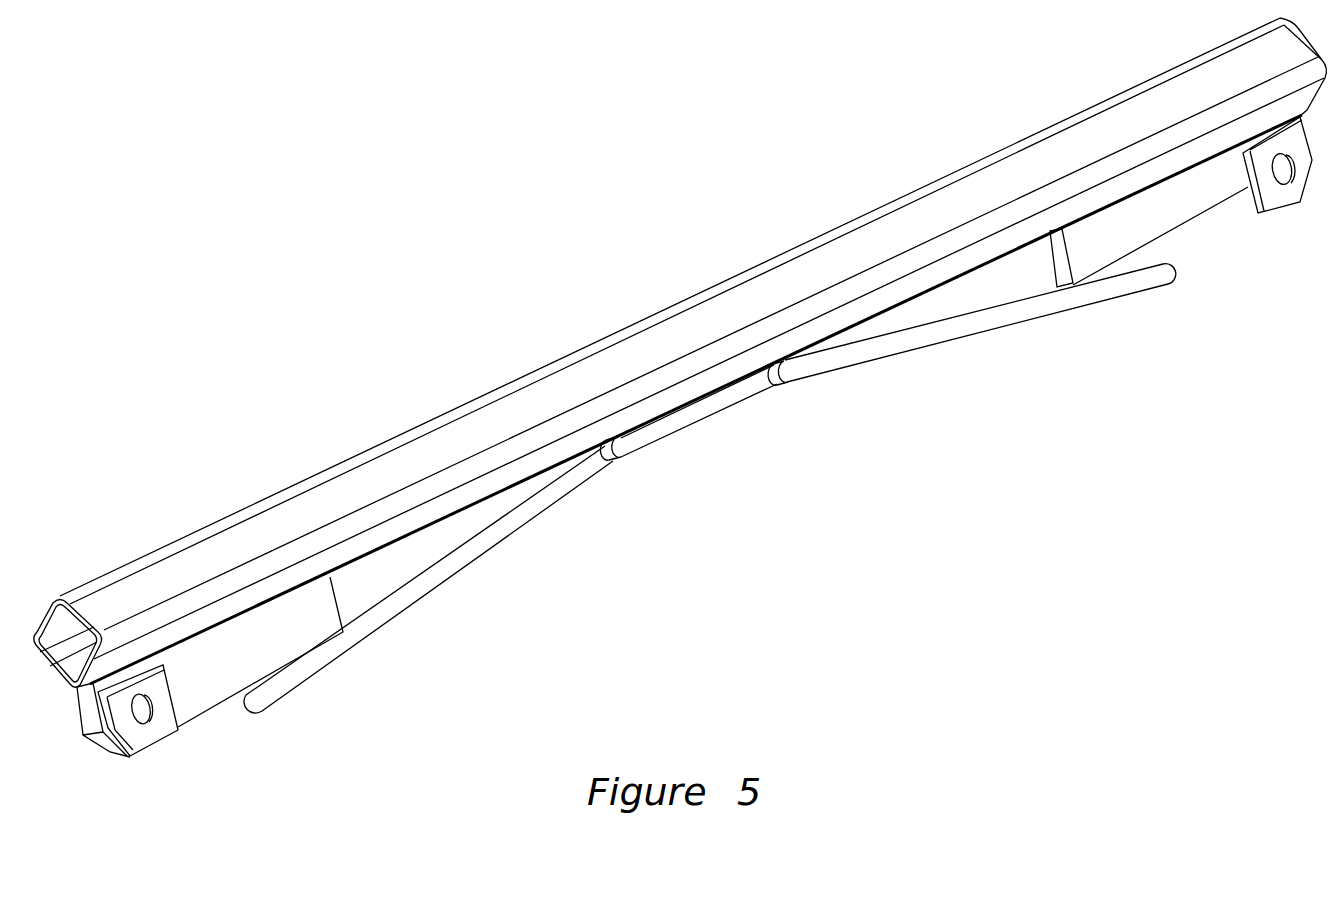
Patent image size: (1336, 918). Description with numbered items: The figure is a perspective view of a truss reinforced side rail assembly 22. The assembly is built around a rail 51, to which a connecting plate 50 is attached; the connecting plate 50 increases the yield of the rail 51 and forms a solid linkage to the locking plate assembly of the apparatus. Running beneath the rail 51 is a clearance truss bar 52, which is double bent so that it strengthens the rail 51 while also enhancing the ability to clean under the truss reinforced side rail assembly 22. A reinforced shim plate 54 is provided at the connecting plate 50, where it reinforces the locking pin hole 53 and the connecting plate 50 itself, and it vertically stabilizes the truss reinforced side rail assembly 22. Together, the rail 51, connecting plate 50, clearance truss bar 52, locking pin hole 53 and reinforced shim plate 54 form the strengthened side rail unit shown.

The truss reinforced side rail assembly 22 is at (680, 352).
The connecting plate 50 is at (697, 469).
The rail 51 is at (590, 347).
The clearance truss bar 52 is at (703, 412).
The locking pin hole 53 is at (723, 468).
The reinforced shim plate 54 is at (712, 466).